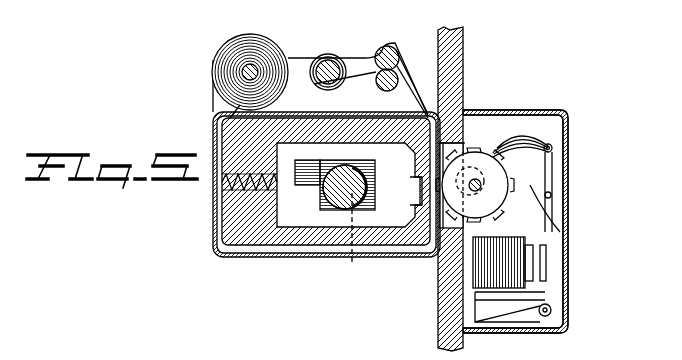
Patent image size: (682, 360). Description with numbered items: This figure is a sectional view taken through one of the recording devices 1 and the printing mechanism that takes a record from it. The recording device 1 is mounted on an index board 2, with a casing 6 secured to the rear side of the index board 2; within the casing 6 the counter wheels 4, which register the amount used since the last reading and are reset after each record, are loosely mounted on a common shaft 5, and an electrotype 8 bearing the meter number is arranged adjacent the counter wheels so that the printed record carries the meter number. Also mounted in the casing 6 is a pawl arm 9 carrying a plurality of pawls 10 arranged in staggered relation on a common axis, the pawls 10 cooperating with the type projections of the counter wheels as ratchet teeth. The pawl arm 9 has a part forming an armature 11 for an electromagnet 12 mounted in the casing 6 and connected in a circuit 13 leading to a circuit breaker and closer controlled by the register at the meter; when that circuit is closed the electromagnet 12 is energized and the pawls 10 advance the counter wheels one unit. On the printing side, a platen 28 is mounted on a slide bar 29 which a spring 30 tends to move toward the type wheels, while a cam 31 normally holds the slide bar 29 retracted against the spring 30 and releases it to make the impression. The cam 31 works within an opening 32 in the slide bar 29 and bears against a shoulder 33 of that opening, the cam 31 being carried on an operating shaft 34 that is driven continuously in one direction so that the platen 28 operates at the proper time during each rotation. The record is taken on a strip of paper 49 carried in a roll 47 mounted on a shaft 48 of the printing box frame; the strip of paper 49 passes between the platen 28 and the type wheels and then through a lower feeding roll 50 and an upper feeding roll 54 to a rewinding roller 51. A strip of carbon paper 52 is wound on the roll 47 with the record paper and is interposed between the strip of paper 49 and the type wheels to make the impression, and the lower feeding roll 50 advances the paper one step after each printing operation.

The recording device 1 is at (478, 130).
The index board 2 is at (455, 57).
The counter wheels 4 is at (497, 181).
The shaft 5 is at (480, 190).
The casing 6 is at (568, 132).
The electrotype 8 is at (470, 265).
The pawl arm 9 is at (562, 232).
The pawls 10 is at (520, 126).
The armature 11 is at (546, 262).
The electromagnet 12 is at (470, 288).
The circuit 13 is at (573, 293).
The platen 28 is at (410, 189).
The slide bar 29 is at (325, 222).
The spring 30 is at (222, 200).
The cam 31 is at (330, 187).
The opening 32 is at (307, 160).
The shoulder 33 is at (328, 162).
The operating shaft 34 is at (357, 238).
The roll 47 is at (222, 78).
The shaft 48 is at (254, 70).
The strip of paper 49 is at (220, 256).
The lower feeding roll 50 is at (392, 90).
The rewinding roller 51 is at (330, 68).
The carbon paper 52 is at (240, 257).
The feeding roll 54 is at (390, 48).